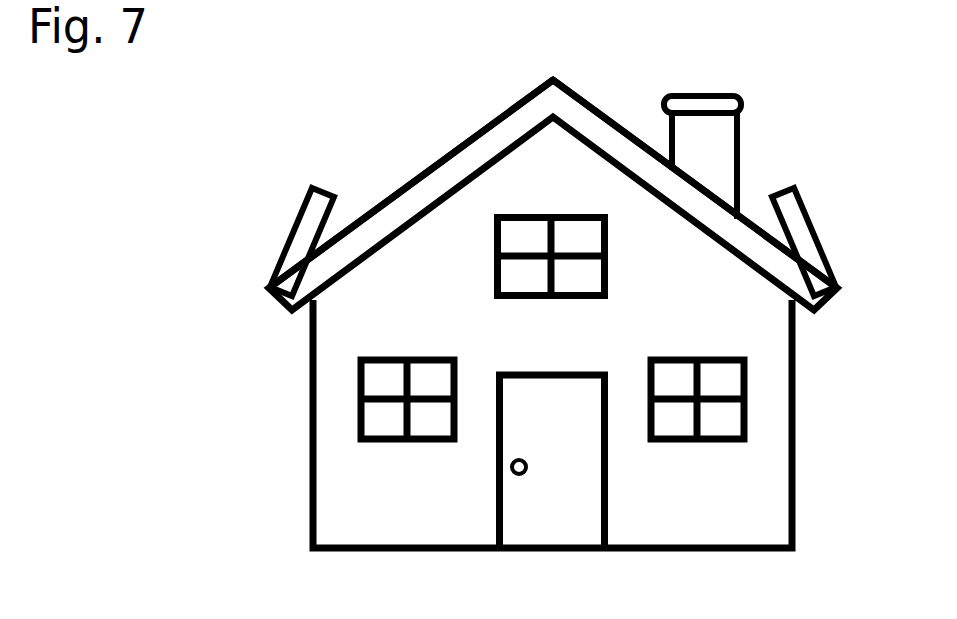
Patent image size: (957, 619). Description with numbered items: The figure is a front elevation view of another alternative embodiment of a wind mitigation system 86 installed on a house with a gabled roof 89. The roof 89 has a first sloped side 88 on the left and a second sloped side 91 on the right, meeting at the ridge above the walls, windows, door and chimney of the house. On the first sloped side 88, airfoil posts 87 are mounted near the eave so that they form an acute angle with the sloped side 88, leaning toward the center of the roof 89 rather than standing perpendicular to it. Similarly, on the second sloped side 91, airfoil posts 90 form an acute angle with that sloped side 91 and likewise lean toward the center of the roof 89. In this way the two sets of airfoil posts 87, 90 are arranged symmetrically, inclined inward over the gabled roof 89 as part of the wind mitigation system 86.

The wind mitigation system 86 is at (148, 422).
The airfoil posts 87 is at (293, 230).
The first sloped side 88 is at (437, 165).
The gabled roof 89 is at (503, 80).
The airfoil posts 90 is at (812, 223).
The second sloped side 91 is at (597, 108).